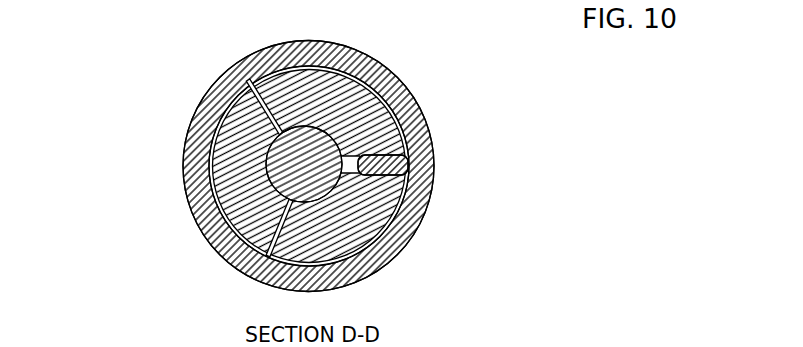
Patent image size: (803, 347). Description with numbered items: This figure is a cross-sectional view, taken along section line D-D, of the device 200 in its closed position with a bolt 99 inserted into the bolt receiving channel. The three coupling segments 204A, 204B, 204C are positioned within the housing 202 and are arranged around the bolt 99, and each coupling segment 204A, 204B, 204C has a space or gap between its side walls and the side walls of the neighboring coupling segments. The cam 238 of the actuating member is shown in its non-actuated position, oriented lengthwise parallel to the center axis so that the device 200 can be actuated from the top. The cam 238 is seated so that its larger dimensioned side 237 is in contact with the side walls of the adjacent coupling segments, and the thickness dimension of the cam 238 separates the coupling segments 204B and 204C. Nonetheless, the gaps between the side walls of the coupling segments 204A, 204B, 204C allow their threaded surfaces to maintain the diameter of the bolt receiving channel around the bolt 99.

The device 200 is at (635, 151).
The housing 202 is at (203, 94).
The coupling segment 204A is at (372, 145).
The coupling segment 204B is at (357, 220).
The coupling segment 204C is at (212, 163).
The cam seat 237 is at (358, 158).
The cam 238 is at (420, 148).
The bolt 99 is at (338, 147).